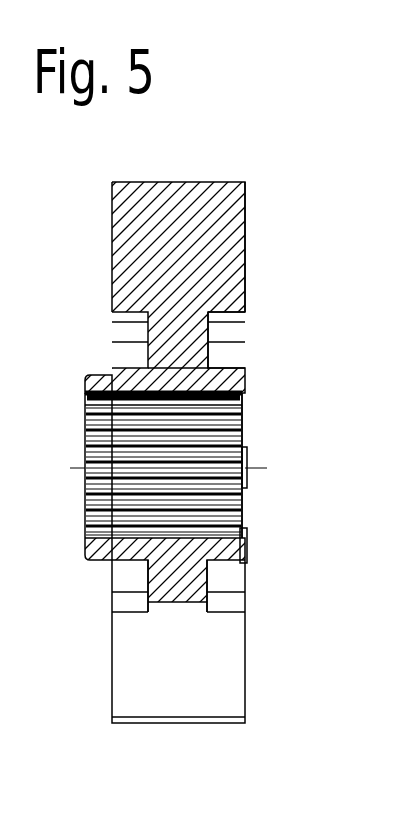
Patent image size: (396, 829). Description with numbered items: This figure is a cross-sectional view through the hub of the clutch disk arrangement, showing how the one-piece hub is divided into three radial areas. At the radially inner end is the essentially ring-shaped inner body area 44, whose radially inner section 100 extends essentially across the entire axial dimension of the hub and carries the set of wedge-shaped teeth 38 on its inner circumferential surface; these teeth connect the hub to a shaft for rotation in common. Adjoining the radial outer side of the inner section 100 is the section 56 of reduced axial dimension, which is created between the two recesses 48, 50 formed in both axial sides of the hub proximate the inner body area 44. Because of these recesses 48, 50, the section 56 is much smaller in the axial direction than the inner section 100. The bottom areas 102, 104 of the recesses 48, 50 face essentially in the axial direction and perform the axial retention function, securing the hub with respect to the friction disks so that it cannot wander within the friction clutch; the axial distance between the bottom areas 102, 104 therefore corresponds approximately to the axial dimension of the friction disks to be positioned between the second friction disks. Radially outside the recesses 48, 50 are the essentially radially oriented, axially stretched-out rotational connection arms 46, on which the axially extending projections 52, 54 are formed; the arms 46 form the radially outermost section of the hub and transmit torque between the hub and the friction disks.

The rotational connection arms 46 is at (184, 213).
The projection 52 is at (132, 220).
The projection 54 is at (233, 208).
The recess 48 is at (125, 310).
The recess 50 is at (232, 312).
The section of reduced axial dimension 56 is at (190, 370).
The inner body area 44 is at (230, 388).
The set of wedge-shaped teeth 38 is at (245, 485).
The radially inner section 100 is at (240, 550).
The bottom area 102 is at (142, 575).
The bottom area 104 is at (208, 577).